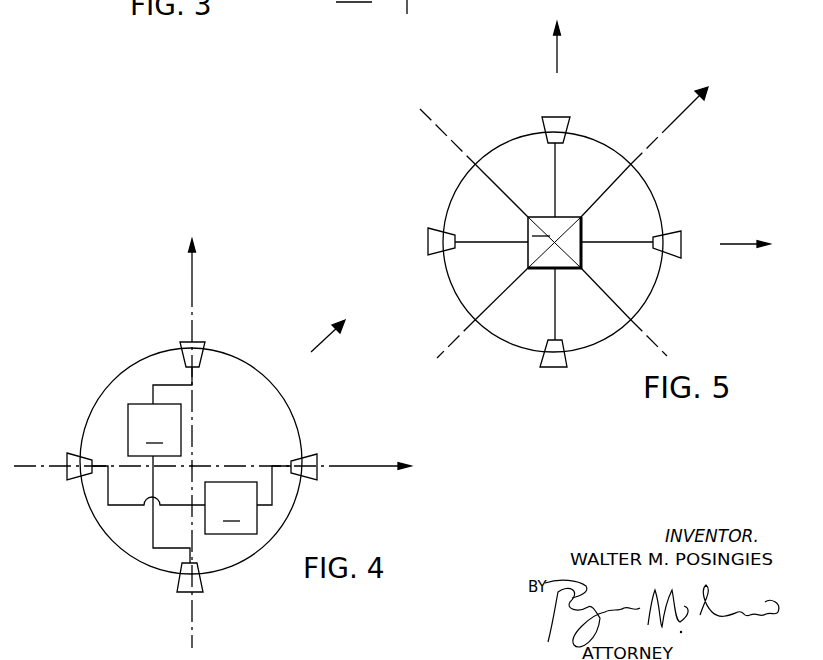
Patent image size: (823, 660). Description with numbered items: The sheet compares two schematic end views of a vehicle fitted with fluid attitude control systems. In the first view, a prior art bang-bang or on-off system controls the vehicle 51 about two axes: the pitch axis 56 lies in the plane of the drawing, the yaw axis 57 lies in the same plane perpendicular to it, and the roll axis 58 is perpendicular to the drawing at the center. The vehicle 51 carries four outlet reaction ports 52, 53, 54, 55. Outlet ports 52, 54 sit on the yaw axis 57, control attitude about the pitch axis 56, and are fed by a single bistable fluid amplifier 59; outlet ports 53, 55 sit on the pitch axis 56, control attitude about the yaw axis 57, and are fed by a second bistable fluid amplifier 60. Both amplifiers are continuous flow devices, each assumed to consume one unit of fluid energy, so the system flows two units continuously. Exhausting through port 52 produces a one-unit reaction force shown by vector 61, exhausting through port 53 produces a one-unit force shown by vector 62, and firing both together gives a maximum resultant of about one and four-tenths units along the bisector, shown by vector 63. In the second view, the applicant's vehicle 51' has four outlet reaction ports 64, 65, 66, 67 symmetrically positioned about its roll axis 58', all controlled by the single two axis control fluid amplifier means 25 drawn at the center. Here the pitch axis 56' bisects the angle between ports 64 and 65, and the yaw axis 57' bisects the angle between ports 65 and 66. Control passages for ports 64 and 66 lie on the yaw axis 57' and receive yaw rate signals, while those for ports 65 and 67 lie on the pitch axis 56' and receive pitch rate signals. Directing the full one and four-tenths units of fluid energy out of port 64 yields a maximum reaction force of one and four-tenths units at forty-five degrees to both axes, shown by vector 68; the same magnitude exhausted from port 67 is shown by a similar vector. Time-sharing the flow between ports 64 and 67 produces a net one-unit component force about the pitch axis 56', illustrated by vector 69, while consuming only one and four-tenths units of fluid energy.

In FIG. 5, the two axis control fluid amplifier means 25 is at (554, 242).
In FIG. 4, the vehicle 51 is at (197, 461).
In FIG. 5, the vehicle 51' is at (565, 242).
In FIG. 4, the outlet reaction port 52 is at (205, 345).
In FIG. 4, the outlet reaction port 53 is at (312, 455).
In FIG. 4, the outlet reaction port 54 is at (178, 588).
In FIG. 4, the outlet reaction port 55 is at (67, 455).
In FIG. 4, the pitch axis 56 is at (179, 479).
In FIG. 5, the pitch axis 56' is at (543, 230).
In FIG. 4, the yaw axis 57 is at (207, 466).
In FIG. 5, the yaw axis 57' is at (553, 247).
In FIG. 4, the roll axis 58 is at (209, 453).
In FIG. 5, the roll axis 58' is at (584, 230).
In FIG. 4, the bistable fluid amplifier 59 is at (159, 483).
In FIG. 4, the bistable fluid amplifier 60 is at (191, 500).
In FIG. 4, the vector 61 is at (192, 260).
In FIG. 4, the vector 62 is at (378, 466).
In FIG. 4, the vector 63 is at (328, 336).
In FIG. 5, the outlet reaction port 64 is at (569, 117).
In FIG. 5, the outlet reaction port 65 is at (433, 228).
In FIG. 5, the outlet reaction port 66 is at (566, 366).
In FIG. 5, the outlet reaction port 67 is at (677, 231).
In FIG. 5, the vector 68 is at (556, 47).
In FIG. 5, the vector 69 is at (682, 112).